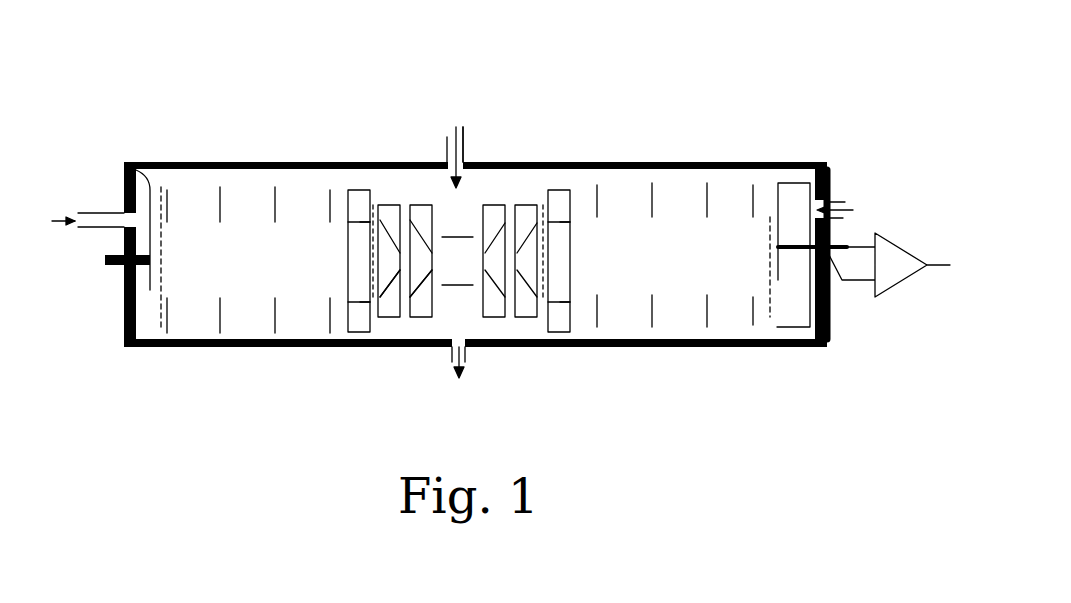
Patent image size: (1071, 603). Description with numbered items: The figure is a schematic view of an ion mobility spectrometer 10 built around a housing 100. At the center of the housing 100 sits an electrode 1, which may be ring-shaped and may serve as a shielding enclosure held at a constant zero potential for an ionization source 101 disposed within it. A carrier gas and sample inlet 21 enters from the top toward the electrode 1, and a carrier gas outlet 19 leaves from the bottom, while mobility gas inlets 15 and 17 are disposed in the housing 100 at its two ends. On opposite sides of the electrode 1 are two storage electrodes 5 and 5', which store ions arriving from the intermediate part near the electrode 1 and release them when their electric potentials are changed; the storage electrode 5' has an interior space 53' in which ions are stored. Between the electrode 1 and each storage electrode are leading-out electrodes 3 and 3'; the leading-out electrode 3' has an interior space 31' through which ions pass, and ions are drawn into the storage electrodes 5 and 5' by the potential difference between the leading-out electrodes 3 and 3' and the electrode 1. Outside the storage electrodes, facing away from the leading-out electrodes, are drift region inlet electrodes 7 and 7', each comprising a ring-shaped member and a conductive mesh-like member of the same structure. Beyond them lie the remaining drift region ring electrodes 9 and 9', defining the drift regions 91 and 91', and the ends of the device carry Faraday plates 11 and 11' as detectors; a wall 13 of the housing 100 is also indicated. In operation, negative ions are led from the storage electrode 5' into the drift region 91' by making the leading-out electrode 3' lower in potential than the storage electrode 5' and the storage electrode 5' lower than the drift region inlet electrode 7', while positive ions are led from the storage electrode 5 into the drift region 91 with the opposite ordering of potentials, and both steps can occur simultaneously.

The electrode 1 is at (470, 162).
The leading-out electrode 3 is at (518, 206).
The leading-out electrode 3' is at (405, 202).
The storage electrode 5 is at (579, 213).
The storage electrode 5' is at (358, 195).
The drift region inlet electrode 7 is at (616, 198).
The drift region inlet electrode 7' is at (328, 210).
The drift region ring electrodes 9 is at (675, 211).
The drift region ring electrodes 9' is at (247, 210).
The ion mobility spectrometer 10 is at (806, 360).
The Faraday plate 11 is at (852, 211).
The collector electrode 11' is at (156, 214).
The housing wall 13 is at (717, 347).
The mobility gas inlet 15 is at (847, 200).
The mobility gas inlet 17 is at (73, 233).
The carrier gas outlet 19 is at (468, 367).
The carrier gas and sample inlet 21 is at (457, 237).
The interior space 31' is at (393, 353).
The interior space 53' is at (364, 334).
The drift region 91 is at (697, 378).
The drift region 91' is at (236, 345).
The housing 100 is at (570, 347).
The ionization source 101 is at (458, 263).